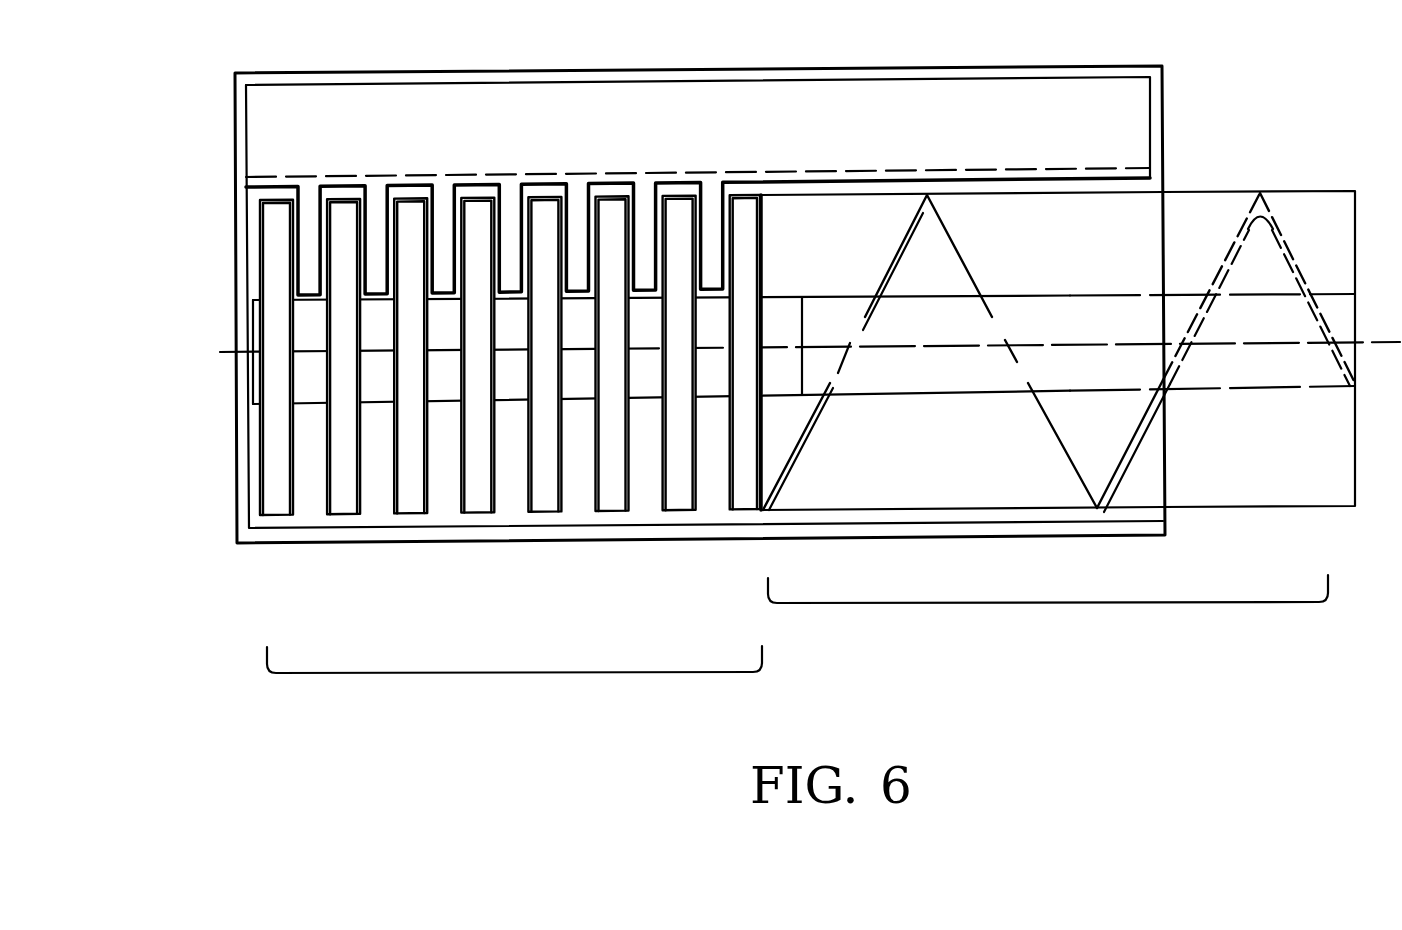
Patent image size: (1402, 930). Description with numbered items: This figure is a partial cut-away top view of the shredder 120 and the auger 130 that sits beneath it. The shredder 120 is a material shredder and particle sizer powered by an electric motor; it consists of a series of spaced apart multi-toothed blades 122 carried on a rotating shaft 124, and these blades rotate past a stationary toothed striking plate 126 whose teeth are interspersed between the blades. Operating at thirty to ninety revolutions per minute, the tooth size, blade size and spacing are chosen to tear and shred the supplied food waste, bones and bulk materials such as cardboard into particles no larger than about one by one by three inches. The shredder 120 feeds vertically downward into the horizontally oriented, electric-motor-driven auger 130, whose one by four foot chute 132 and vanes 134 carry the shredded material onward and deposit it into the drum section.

The shredder 120 is at (495, 673).
The multi-toothed blades 122 is at (418, 502).
The rotating shaft 124 is at (258, 361).
The toothed striking plate 126 is at (467, 110).
The auger 130 is at (1062, 602).
The chute 132 is at (1243, 508).
The vanes 134 is at (1127, 453).